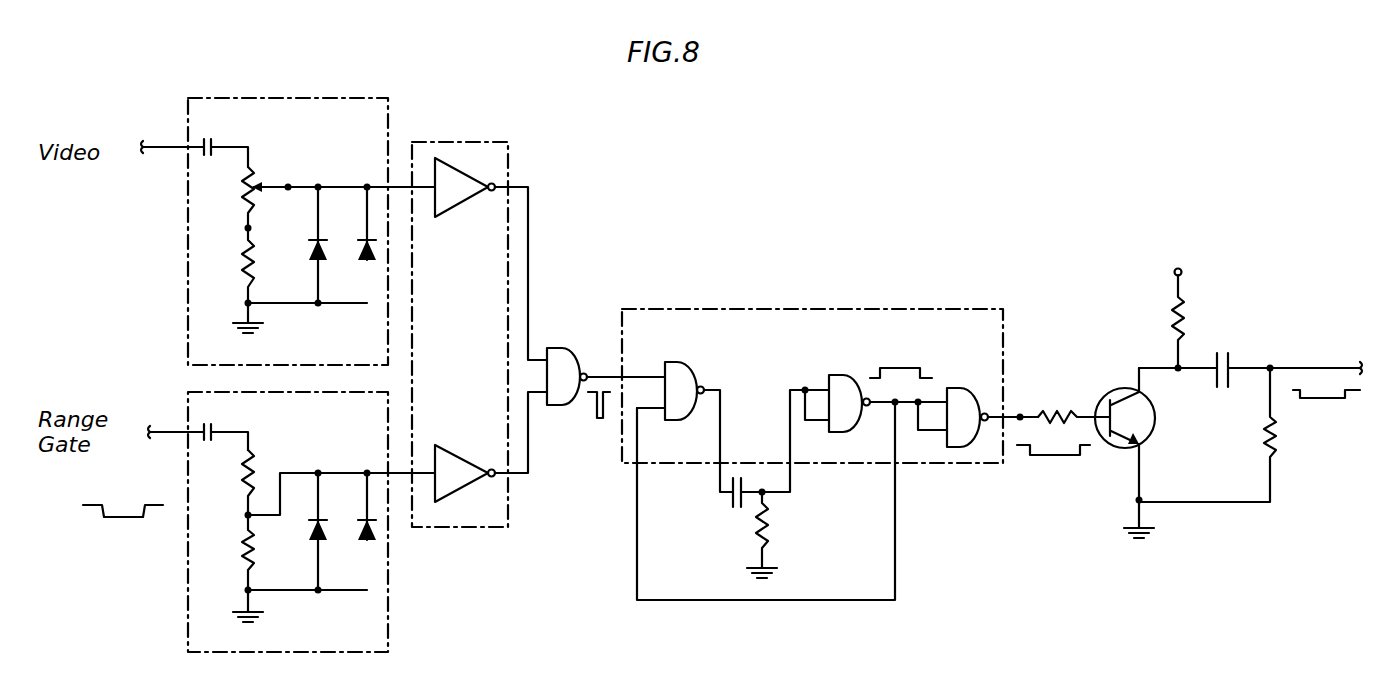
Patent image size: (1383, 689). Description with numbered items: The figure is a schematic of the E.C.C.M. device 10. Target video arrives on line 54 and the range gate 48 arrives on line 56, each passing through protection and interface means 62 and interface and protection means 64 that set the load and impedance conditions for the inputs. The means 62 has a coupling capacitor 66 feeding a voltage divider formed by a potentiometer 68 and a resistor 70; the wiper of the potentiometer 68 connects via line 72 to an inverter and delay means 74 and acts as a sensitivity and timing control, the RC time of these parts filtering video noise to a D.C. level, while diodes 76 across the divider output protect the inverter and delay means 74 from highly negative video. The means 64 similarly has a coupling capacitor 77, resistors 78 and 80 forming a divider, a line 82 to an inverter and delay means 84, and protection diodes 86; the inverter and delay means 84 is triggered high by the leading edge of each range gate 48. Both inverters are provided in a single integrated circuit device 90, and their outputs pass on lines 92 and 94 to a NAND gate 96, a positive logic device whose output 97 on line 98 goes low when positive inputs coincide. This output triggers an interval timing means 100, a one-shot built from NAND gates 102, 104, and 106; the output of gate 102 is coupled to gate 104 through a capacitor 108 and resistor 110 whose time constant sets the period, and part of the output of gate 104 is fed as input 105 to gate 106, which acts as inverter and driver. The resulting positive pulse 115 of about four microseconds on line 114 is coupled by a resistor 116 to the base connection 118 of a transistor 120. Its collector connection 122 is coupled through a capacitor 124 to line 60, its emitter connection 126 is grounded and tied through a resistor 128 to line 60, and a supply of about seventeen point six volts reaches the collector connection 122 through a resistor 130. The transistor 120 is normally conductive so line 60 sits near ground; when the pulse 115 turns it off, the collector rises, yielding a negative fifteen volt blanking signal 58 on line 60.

The device 10 is at (976, 204).
The range gate 48 is at (134, 516).
The line 54 is at (168, 147).
The line 56 is at (174, 432).
The blanking signal 58 is at (1335, 402).
The line 60 is at (1320, 366).
The protection and interface means 62 is at (392, 88).
The interface and protection means 64 is at (388, 600).
The coupling capacitor 66 is at (208, 140).
The potentiometer 68 is at (252, 174).
The resistor 70 is at (256, 267).
The line 72 is at (338, 186).
The inverter and delay means 74 is at (455, 180).
The diodes 76 is at (354, 252).
The coupling capacitor 77 is at (203, 443).
The resistor 78 is at (263, 462).
The resistor 80 is at (256, 565).
The line 82 is at (338, 472).
The inverter and delay means 84 is at (455, 466).
The protection diodes 86 is at (354, 535).
The integrated circuit device 90 is at (508, 142).
The line 92 is at (530, 206).
The line 94 is at (530, 476).
The NAND gate 96 is at (563, 353).
The output 97 is at (601, 415).
The line 98 is at (641, 372).
The interval timing means 100 is at (1003, 309).
The NAND gate 102 is at (684, 367).
The NAND gate 104 is at (850, 372).
The input 105 is at (900, 360).
The NAND gate 106 is at (958, 387).
The capacitor 108 is at (733, 510).
The resistor 110 is at (768, 536).
The line 114 is at (1013, 412).
The pulse 115 is at (1032, 460).
The resistor 116 is at (1055, 412).
The base connection 118 is at (1095, 412).
The transistor 120 is at (1140, 422).
The collector connection 122 is at (1143, 394).
The capacitor 124 is at (1222, 350).
The emitter connection 126 is at (1148, 444).
The resistor 128 is at (1263, 424).
The resistor 130 is at (1186, 318).